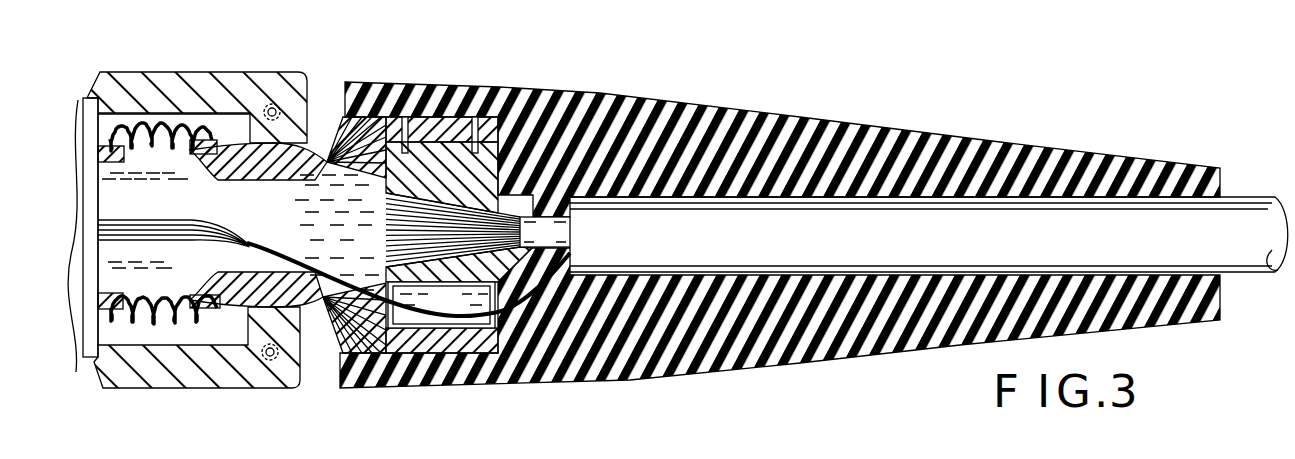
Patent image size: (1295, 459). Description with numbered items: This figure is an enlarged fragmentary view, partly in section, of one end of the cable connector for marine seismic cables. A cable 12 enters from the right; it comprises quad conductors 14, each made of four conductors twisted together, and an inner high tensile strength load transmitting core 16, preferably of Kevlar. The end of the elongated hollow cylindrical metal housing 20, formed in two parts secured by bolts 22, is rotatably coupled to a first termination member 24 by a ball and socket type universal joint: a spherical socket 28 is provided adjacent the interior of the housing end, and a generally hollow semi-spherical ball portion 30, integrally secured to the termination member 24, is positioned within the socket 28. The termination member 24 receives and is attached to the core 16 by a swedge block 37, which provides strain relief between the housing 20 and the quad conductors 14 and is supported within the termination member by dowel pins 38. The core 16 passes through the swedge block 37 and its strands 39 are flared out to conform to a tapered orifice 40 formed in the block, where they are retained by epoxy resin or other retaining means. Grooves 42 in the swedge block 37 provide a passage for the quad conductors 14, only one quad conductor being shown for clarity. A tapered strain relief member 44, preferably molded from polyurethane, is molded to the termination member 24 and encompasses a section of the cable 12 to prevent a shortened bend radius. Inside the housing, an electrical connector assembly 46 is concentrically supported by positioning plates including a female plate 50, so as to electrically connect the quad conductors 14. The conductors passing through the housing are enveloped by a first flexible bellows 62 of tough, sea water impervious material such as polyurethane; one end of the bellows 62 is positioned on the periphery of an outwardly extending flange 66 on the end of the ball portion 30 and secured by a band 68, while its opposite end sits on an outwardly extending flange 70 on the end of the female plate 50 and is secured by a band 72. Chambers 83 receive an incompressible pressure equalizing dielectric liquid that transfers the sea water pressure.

The marine seismic cable 12 is at (1235, 197).
The quad conductor 14 is at (290, 256).
The load transmitting core 16 is at (545, 232).
The housing 20 is at (258, 72).
The bolt 22 is at (278, 106).
The first termination member 24 is at (338, 352).
The socket 28 is at (275, 148).
The ball portion 30 is at (305, 290).
The swedge block 37 is at (443, 138).
The dowel pin 38 is at (405, 120).
The strands 39 is at (447, 238).
The tapered orifice 40 is at (398, 203).
The groove 42 is at (437, 306).
The tapered strain relief member 44 is at (545, 90).
The electrical connector assembly 46 is at (103, 115).
The female positioning plate 50 is at (84, 362).
The first flexible bellows 62 is at (158, 130).
The outwardly extending flange 66 is at (207, 172).
The band 68 is at (205, 140).
The outwardly extending flange 70 is at (107, 297).
The band 72 is at (105, 310).
The chamber 83 is at (148, 204).